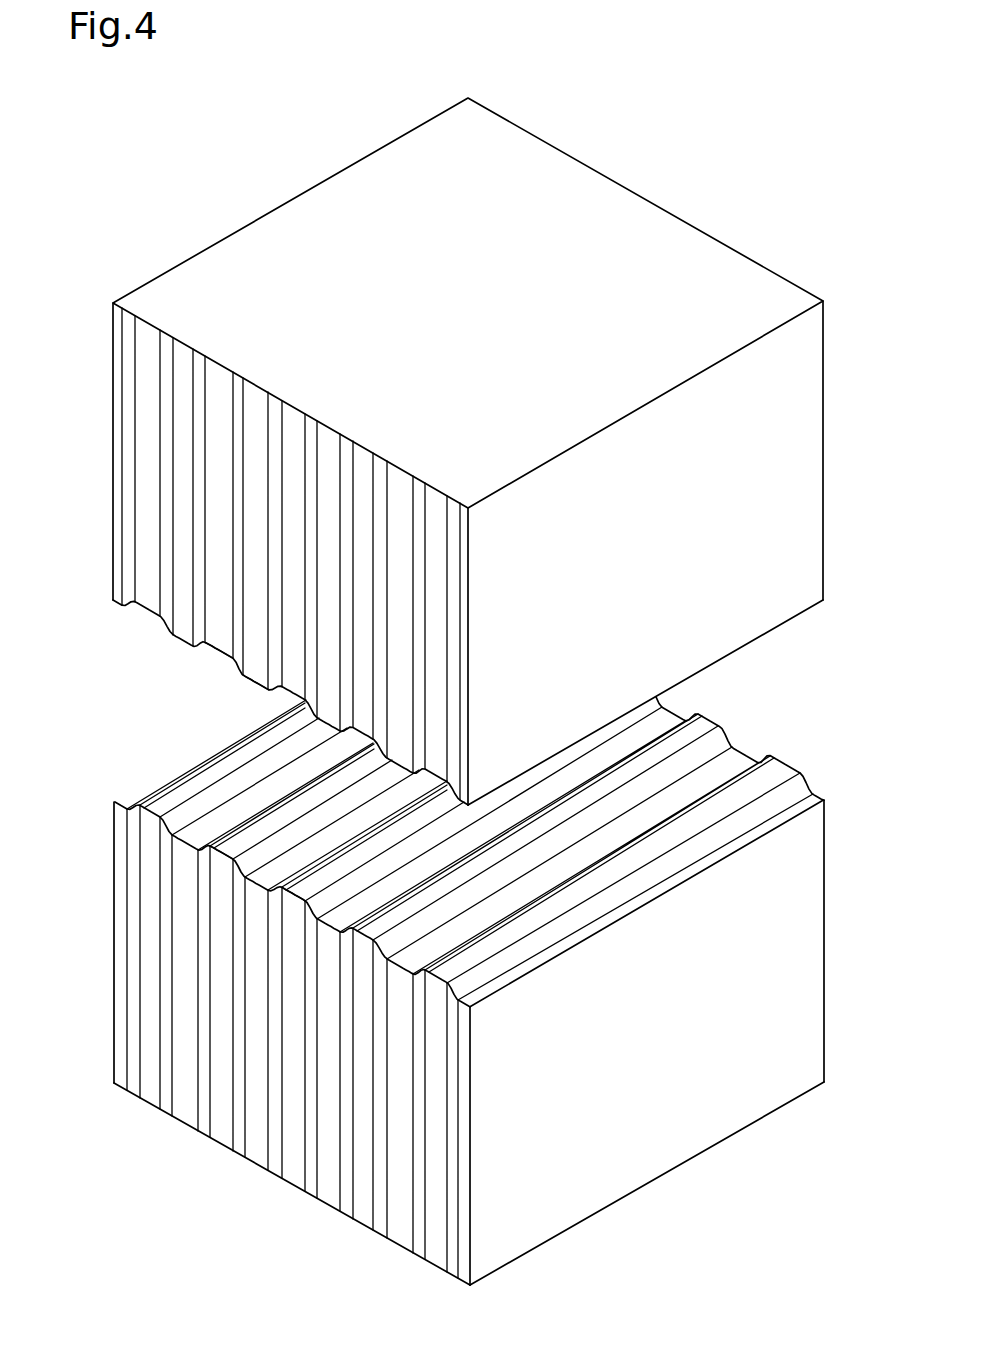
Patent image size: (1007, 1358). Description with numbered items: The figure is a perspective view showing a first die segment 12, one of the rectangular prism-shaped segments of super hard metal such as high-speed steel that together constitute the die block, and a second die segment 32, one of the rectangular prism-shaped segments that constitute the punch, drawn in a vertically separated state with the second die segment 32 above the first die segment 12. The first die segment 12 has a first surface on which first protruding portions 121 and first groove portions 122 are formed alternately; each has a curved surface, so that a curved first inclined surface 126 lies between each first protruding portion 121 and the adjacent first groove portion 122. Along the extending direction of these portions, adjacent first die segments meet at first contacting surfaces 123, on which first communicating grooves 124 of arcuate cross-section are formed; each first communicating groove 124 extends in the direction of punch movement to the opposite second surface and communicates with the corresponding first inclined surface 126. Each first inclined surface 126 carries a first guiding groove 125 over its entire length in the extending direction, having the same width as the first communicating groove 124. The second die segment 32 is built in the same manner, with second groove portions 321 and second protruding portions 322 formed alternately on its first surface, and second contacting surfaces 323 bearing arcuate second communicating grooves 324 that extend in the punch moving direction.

The first die segment 12 is at (453, 991).
The first protruding portion 121 is at (240, 832).
The first groove portion 122 is at (282, 875).
The first contacting surface 123 is at (113, 1062).
The first communicating groove 124 is at (165, 888).
The first guiding groove 125 is at (510, 873).
The first inclined surface 126 is at (642, 795).
The second die segment 32 is at (448, 451).
The second groove portion 321 is at (205, 643).
The second protruding portion 322 is at (270, 692).
The second contacting surface 323 is at (113, 338).
The second communicating groove 324 is at (200, 450).